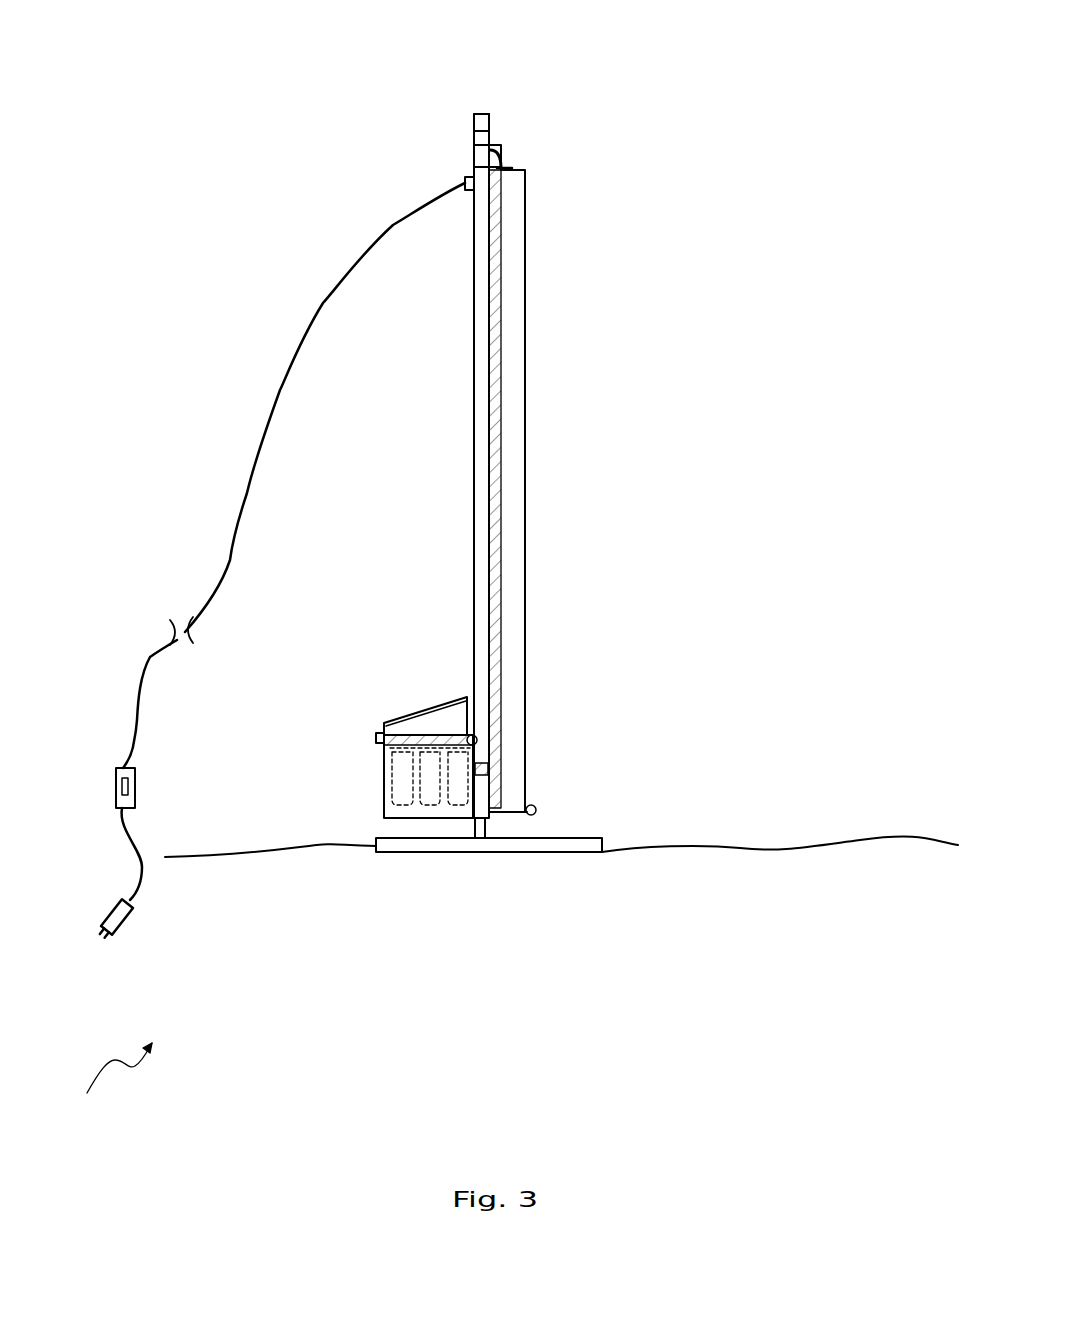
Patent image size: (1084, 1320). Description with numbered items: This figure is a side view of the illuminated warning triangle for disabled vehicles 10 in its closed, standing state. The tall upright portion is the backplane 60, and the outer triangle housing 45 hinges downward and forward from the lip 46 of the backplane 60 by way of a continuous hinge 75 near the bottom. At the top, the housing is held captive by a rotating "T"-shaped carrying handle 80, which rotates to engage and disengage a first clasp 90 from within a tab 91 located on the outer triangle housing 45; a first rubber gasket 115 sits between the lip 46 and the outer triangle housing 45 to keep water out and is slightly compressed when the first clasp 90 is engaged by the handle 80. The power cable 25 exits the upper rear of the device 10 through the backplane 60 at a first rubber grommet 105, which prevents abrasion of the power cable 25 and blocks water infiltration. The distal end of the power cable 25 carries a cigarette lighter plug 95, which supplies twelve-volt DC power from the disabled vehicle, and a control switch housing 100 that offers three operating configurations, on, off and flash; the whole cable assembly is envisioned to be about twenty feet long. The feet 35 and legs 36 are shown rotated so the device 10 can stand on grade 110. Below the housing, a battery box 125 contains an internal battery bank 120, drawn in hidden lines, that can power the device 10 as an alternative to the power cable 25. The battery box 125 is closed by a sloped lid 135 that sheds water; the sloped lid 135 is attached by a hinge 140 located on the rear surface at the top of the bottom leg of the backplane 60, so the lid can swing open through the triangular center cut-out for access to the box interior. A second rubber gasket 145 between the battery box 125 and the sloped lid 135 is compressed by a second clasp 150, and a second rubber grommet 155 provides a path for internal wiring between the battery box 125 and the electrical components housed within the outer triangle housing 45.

The illuminated warning triangle for disabled vehicles 10 is at (107, 1086).
The power cable 25 is at (290, 363).
The feet 35 is at (457, 845).
The legs 36 is at (485, 838).
The outer triangle housing 45 is at (510, 500).
The lip 46 is at (503, 818).
The backplane 60 is at (473, 322).
The continuous hinge 75 is at (536, 808).
The rotating "T"-shaped carrying handle 80 is at (481, 113).
The first clasp 90 is at (507, 167).
The tab 91 is at (513, 168).
The cigarette lighter plug 95 is at (108, 912).
The control switch housing 100 is at (116, 782).
The first rubber grommet 105 is at (466, 178).
The grade 110 is at (208, 855).
The first rubber gasket 115 is at (495, 410).
The internal battery bank 120 is at (428, 798).
The battery box 125 is at (425, 820).
The sloped lid 135 is at (430, 700).
The hinge 140 is at (476, 738).
The second rubber gasket 145 is at (412, 742).
The second clasp 150 is at (378, 738).
The second rubber grommet 155 is at (487, 768).